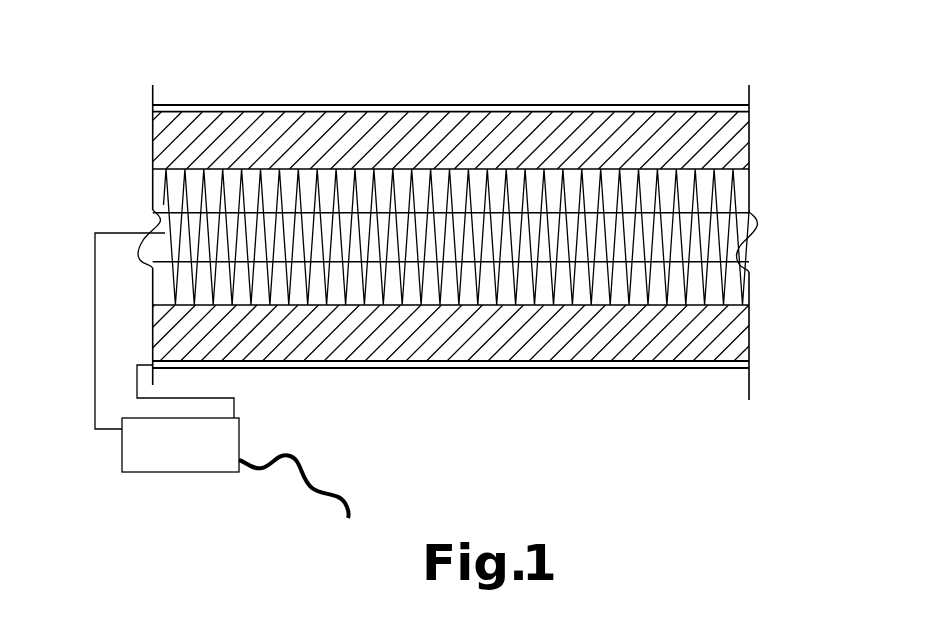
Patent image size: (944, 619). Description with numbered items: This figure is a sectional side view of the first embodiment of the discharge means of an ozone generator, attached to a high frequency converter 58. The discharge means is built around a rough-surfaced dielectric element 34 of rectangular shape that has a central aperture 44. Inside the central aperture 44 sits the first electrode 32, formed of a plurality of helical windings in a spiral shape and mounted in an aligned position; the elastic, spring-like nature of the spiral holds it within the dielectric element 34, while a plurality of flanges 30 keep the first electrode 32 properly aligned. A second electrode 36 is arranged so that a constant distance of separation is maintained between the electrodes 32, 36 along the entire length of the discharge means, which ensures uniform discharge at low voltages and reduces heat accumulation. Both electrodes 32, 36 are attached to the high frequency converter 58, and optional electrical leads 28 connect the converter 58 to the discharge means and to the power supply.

The dielectric element 34 is at (810, 73).
The second electrode 36 is at (603, 105).
The flanges 30 is at (690, 212).
The first electrode 32 is at (738, 228).
The central aperture 44 is at (150, 230).
The electrical leads 28 is at (137, 383).
The high frequency converter 58 is at (200, 461).